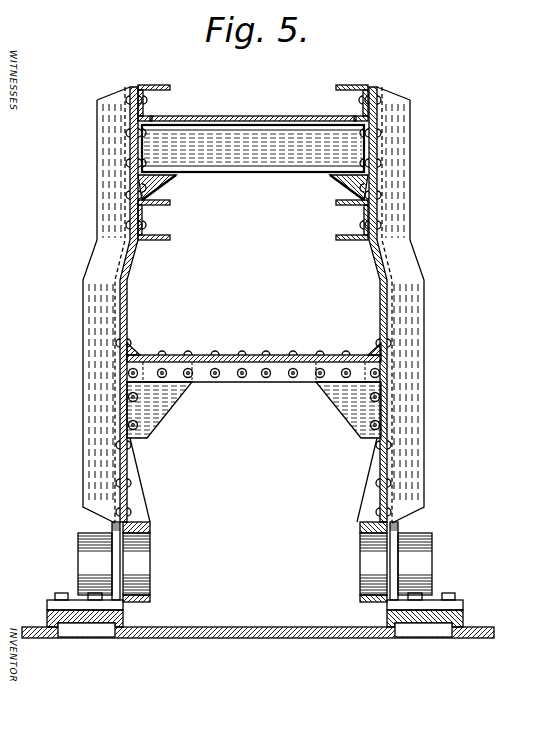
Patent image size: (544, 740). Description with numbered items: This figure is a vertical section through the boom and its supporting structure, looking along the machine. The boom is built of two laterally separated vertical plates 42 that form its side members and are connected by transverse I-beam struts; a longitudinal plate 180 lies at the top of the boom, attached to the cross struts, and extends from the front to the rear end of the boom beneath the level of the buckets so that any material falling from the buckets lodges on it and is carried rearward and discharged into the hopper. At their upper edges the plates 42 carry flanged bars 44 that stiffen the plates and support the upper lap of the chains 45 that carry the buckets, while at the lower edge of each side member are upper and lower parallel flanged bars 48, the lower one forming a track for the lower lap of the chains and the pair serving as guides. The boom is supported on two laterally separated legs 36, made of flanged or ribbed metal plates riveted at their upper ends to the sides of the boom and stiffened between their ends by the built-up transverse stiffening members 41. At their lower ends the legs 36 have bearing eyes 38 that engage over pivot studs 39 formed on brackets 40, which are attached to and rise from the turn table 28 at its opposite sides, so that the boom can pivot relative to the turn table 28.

The turn table 28 is at (268, 639).
The legs 36 is at (118, 316).
The bearing eyes 38 is at (150, 524).
The pivot studs 39 is at (150, 565).
The brackets 40 is at (60, 594).
The transverse stiffening members 41 is at (230, 356).
The vertical plates 42 is at (144, 117).
The flanged bars 44 is at (146, 85).
The chains 45 is at (266, 166).
The upper and lower parallel flanged bars 48 is at (170, 233).
The longitudinal plate 180 is at (257, 104).